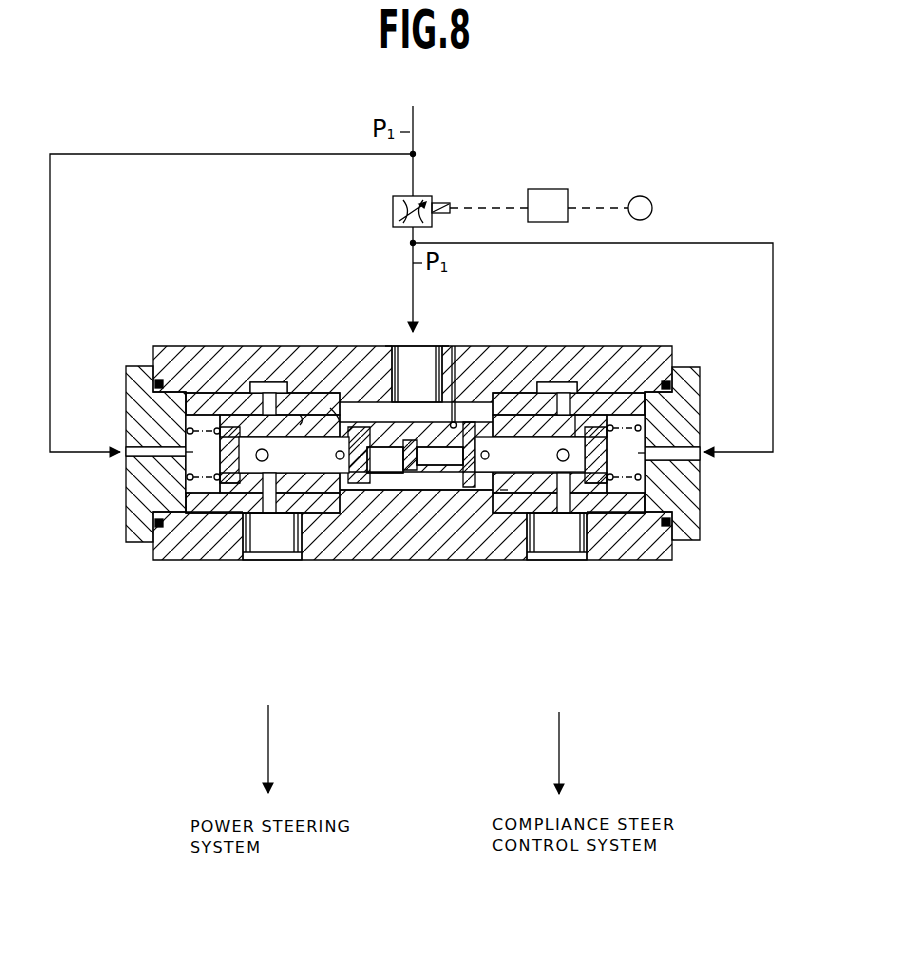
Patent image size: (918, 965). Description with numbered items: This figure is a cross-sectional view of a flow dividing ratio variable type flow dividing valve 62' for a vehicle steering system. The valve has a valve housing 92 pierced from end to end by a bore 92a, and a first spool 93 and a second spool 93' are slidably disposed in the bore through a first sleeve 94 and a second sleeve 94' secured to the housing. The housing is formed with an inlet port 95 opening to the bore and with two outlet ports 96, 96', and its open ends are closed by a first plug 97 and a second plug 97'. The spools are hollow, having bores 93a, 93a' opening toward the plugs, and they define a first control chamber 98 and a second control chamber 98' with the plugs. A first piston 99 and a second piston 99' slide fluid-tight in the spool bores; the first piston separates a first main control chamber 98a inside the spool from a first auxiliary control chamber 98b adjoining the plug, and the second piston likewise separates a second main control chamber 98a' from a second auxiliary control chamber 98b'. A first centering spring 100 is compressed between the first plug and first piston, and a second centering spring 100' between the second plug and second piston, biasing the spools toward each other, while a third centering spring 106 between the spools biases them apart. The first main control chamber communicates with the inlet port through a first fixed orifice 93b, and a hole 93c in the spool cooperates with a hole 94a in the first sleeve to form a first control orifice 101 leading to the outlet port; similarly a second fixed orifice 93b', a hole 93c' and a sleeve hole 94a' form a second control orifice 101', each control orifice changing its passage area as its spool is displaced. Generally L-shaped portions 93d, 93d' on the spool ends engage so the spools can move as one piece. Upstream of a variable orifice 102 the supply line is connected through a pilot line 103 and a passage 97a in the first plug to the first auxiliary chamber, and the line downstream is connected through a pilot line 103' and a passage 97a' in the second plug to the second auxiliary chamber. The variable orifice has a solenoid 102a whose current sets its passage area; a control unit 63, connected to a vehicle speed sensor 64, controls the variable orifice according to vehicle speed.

The variable ratio type flow dividing valve 62' is at (191, 642).
The control unit 63 is at (549, 189).
The vehicle sensor 64 is at (652, 208).
The valve housing 92 is at (667, 352).
The bore 92a is at (443, 527).
The first spool 93 is at (295, 391).
The bore of first spool 93a is at (296, 544).
The first fixed orifice 93b is at (355, 370).
The hole of first spool 93c is at (294, 455).
The L-shaped portion of first spool 93d is at (417, 374).
The second spool 93' is at (535, 391).
The bore of second spool 93a' is at (563, 548).
The second fixed orifice 93b' is at (530, 454).
The hole of second spool 93c' is at (585, 377).
The L-shaped portion of second spool 93d' is at (400, 520).
The first sleeve 94 is at (263, 416).
The hole of first sleeve 94a is at (271, 500).
The second sleeve 94' is at (569, 415).
The hole of second sleeve 94a' is at (605, 493).
The inlet port 95 is at (394, 346).
The first outlet port 96 is at (283, 554).
The second outlet port 96' is at (561, 551).
The first plug 97 is at (148, 434).
The passage of first plug 97a is at (131, 435).
The second plug 97' is at (695, 452).
The passage of second plug 97a' is at (701, 470).
The first control chamber 98 is at (151, 475).
The first main control chamber 98a is at (294, 372).
The first auxiliary control chamber 98b is at (136, 476).
The second control chamber 98' is at (673, 487).
The second main control chamber 98a' is at (509, 542).
The second auxiliary control chamber 98b' is at (698, 431).
The first piston 99 is at (264, 406).
The second piston 99' is at (572, 405).
The first centering spring 100 is at (208, 545).
The second centering spring 100' is at (659, 551).
The first control orifice 101 is at (254, 555).
The second control orifice 101' is at (613, 561).
The variable orifice 102 is at (388, 210).
The solenoid 102a is at (441, 203).
The pilot line 103 is at (233, 284).
The pilot line 103' is at (609, 331).
The third centering spring 106 is at (455, 398).